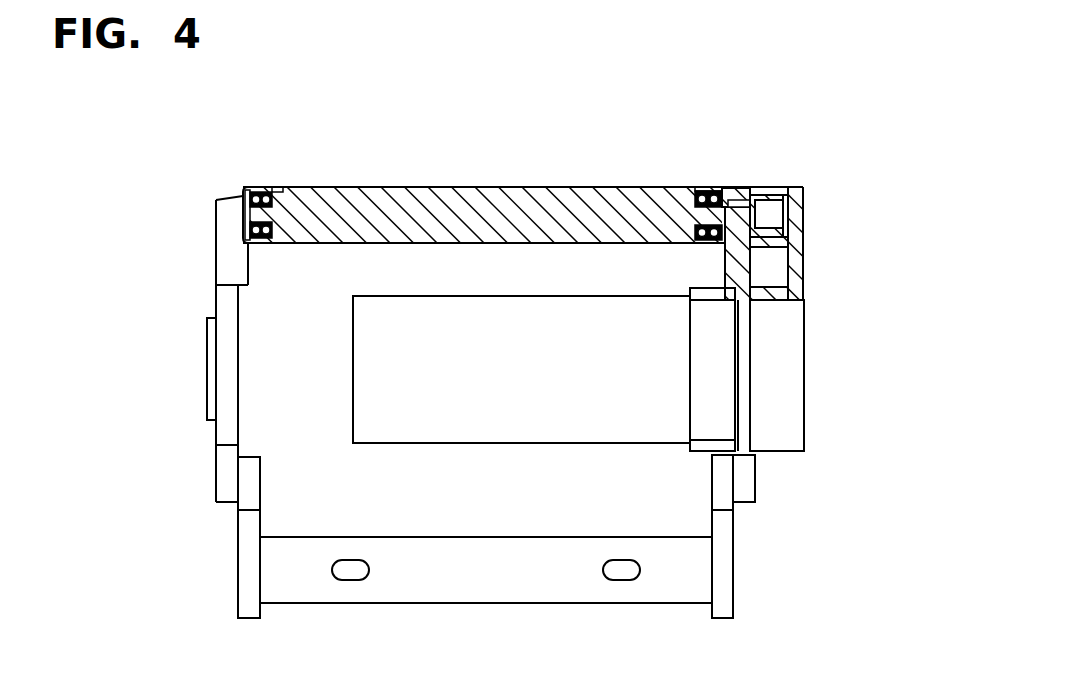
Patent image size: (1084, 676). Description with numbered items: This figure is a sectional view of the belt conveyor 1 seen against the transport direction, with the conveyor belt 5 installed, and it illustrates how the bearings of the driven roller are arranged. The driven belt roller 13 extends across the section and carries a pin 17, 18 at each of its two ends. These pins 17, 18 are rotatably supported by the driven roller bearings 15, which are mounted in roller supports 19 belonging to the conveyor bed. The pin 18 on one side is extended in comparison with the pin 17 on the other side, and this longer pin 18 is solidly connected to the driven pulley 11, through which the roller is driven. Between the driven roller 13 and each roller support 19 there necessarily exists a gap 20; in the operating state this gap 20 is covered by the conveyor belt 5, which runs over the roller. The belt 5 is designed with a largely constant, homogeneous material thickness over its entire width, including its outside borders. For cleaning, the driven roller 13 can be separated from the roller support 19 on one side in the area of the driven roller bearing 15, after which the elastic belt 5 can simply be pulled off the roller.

The belt conveyor 1 is at (842, 152).
The conveyor belt 5 is at (523, 187).
The driven pulley 11 is at (768, 190).
The driven belt roller 13 is at (433, 187).
The driven roller bearing 15 is at (262, 188).
The pin 17 is at (246, 186).
The pin 18 is at (752, 192).
The roller support 19 is at (248, 186).
The gap 20 is at (278, 187).